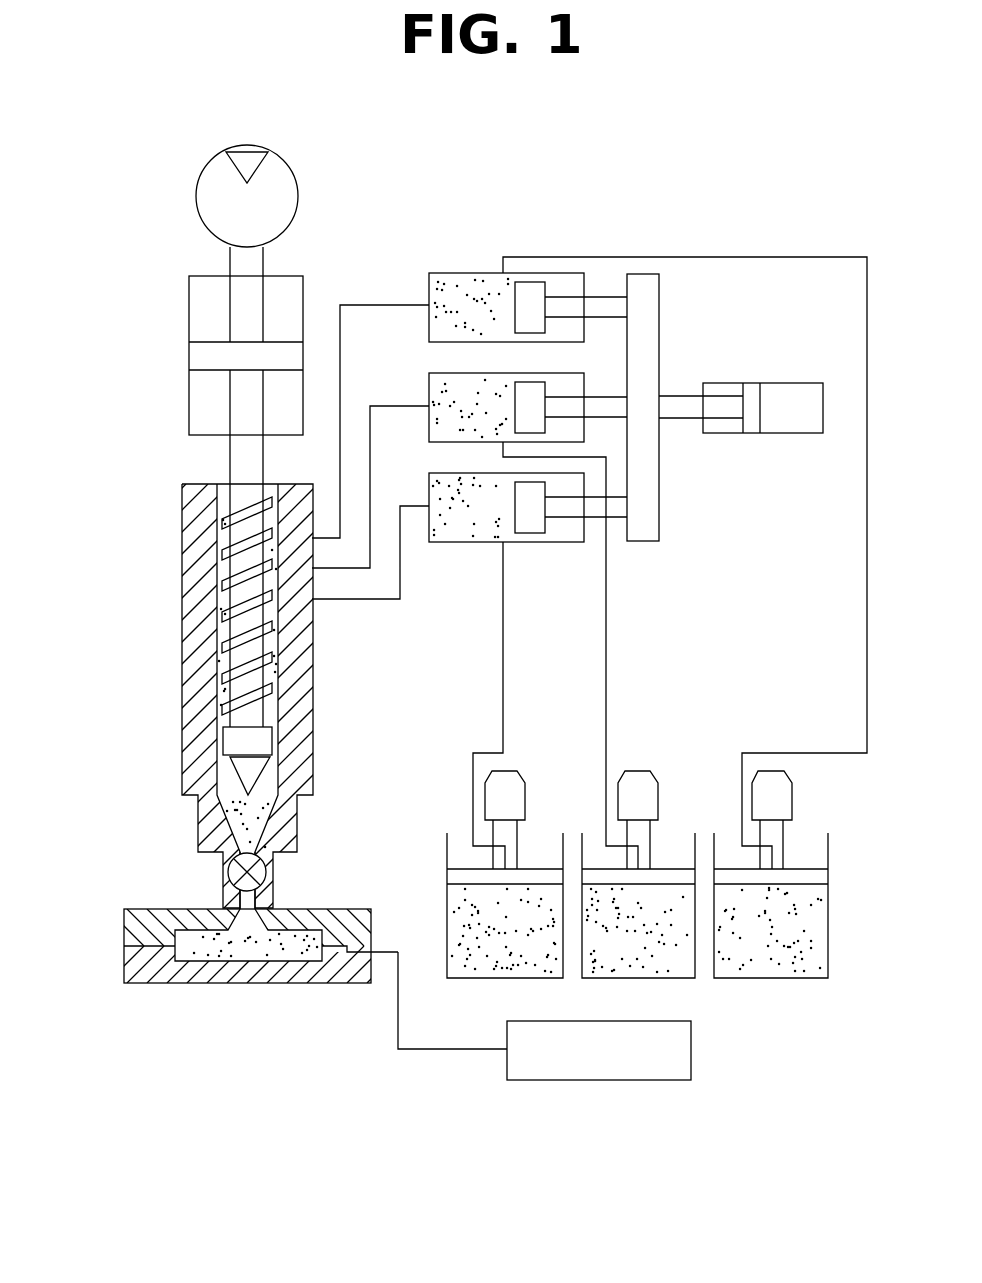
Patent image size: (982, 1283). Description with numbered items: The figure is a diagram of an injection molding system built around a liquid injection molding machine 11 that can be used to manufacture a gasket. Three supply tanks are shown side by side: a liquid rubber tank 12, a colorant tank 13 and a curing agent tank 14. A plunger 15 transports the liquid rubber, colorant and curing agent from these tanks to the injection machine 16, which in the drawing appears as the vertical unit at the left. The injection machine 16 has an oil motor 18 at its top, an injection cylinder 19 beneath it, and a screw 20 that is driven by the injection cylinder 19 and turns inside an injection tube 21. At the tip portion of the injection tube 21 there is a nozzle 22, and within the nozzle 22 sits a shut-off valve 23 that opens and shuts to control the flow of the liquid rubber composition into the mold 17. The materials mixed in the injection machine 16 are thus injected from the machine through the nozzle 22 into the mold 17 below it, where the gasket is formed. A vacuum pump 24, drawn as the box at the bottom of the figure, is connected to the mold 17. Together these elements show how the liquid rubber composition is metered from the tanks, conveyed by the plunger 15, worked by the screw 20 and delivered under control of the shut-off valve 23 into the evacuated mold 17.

The liquid injection molding machine 11 is at (448, 211).
The liquid rubber tank 12 is at (470, 978).
The colorant tank 13 is at (673, 978).
The curing agent tank 14 is at (803, 978).
The plunger 15 is at (641, 290).
The injection machine 16 is at (166, 455).
The mold 17 is at (158, 965).
The oil motor 18 is at (212, 197).
The injection cylinder 19 is at (205, 356).
The screw 20 is at (227, 613).
The injection tube 21 is at (200, 700).
The nozzle 22 is at (252, 897).
The shut-off valve 23 is at (232, 872).
The vacuum pump 24 is at (600, 1058).